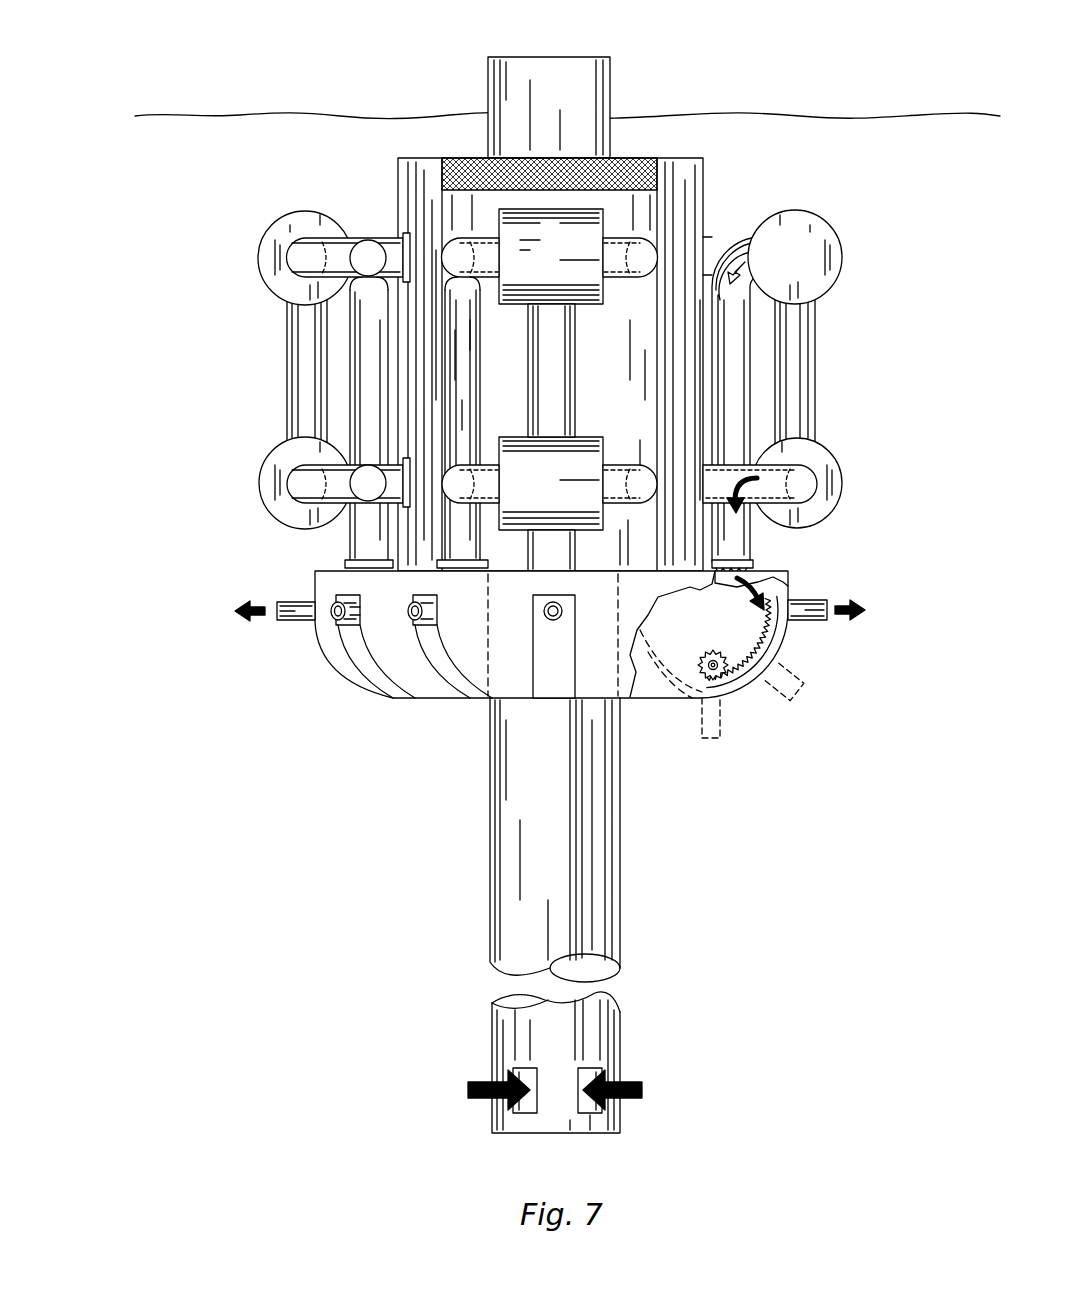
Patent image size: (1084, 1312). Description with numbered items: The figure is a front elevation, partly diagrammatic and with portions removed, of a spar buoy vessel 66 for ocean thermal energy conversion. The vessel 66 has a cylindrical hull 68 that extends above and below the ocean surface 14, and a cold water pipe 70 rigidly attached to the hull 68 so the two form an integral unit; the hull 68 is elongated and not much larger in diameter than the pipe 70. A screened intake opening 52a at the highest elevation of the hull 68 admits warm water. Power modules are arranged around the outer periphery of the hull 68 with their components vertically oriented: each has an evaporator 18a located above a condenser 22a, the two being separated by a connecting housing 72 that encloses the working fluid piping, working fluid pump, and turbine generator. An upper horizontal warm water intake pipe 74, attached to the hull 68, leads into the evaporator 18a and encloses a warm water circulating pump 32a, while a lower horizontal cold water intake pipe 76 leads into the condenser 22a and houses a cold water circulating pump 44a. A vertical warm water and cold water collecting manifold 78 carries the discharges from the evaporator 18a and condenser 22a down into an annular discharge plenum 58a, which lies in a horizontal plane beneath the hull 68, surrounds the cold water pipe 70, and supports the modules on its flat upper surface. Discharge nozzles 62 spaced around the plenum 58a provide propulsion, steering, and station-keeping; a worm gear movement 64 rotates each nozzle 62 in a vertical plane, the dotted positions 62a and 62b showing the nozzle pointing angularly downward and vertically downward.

The surface 14 is at (849, 104).
The spar buoy vessel 66 is at (578, 32).
The cylindrical hull 68 is at (418, 157).
The screened intake opening 52a is at (636, 158).
The connecting housing 72 is at (286, 370).
The evaporator 18a is at (258, 260).
The condenser 22a is at (258, 485).
The upper horizontal warm water intake pipe 74 is at (404, 236).
The lower horizontal cold water intake pipe 76 is at (310, 463).
The warm water circulating pump 32a is at (366, 240).
The cold water circulating pump 44a is at (368, 502).
The warm water and cold water collecting manifold 78 is at (345, 564).
The discharge nozzle 62 is at (808, 600).
The worm gear movement 64 is at (713, 650).
The nozzle in second position 62a is at (800, 683).
The nozzle in third position 62b is at (722, 727).
The annular discharge plenum 58a is at (656, 700).
The cold water pipe 70 is at (622, 845).